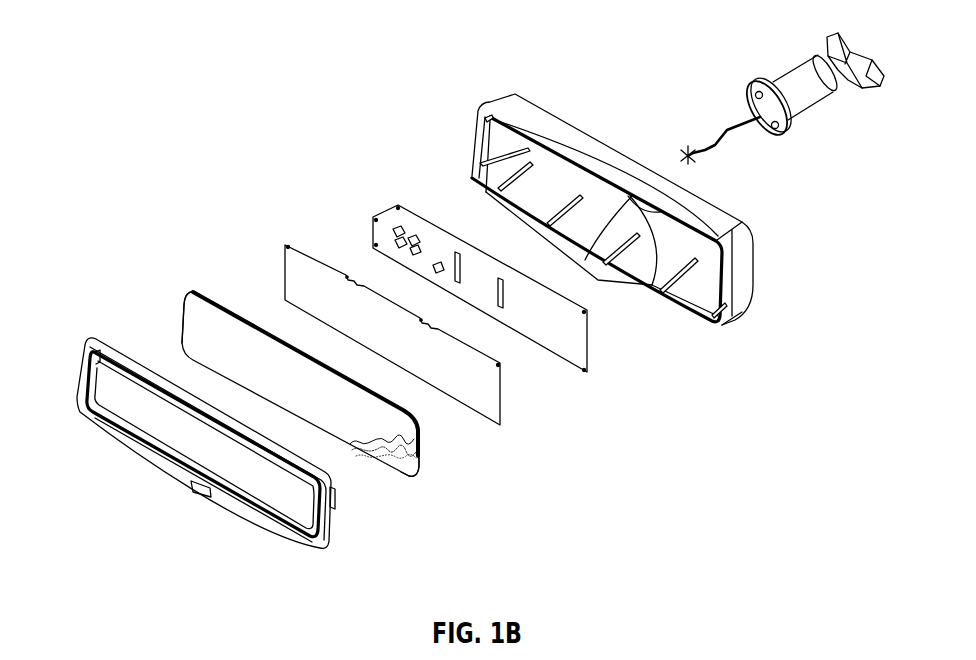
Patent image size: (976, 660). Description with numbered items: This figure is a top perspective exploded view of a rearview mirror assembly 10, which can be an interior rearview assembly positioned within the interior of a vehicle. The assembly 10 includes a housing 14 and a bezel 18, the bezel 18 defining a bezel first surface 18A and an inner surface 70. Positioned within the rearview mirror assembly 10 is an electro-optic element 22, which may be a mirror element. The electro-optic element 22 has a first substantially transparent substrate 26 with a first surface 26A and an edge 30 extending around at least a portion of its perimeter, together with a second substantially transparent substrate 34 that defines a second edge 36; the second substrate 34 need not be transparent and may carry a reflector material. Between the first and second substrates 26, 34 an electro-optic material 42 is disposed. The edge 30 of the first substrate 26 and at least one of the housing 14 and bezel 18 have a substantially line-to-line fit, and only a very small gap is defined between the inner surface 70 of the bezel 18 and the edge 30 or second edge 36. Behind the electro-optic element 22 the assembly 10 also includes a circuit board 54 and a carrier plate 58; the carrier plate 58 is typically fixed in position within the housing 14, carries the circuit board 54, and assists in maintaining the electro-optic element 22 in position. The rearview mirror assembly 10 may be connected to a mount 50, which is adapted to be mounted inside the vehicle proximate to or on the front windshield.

The rearview mirror assembly 10 is at (203, 132).
The housing 14 is at (742, 261).
The bezel 18 is at (313, 552).
The bezel first surface 18A is at (262, 518).
The electro-optic element 22 is at (182, 287).
The first substantially transparent substrate 26 is at (299, 386).
The first surface 26A is at (228, 328).
The edge 30 is at (172, 320).
The second substantially transparent substrate 34 is at (407, 473).
The second edge 36 is at (420, 460).
The electro-optic material 42 is at (380, 452).
The mount 50 is at (803, 92).
The circuit board 54 is at (574, 337).
The carrier plate 58 is at (488, 390).
The inner surface 70 is at (95, 368).